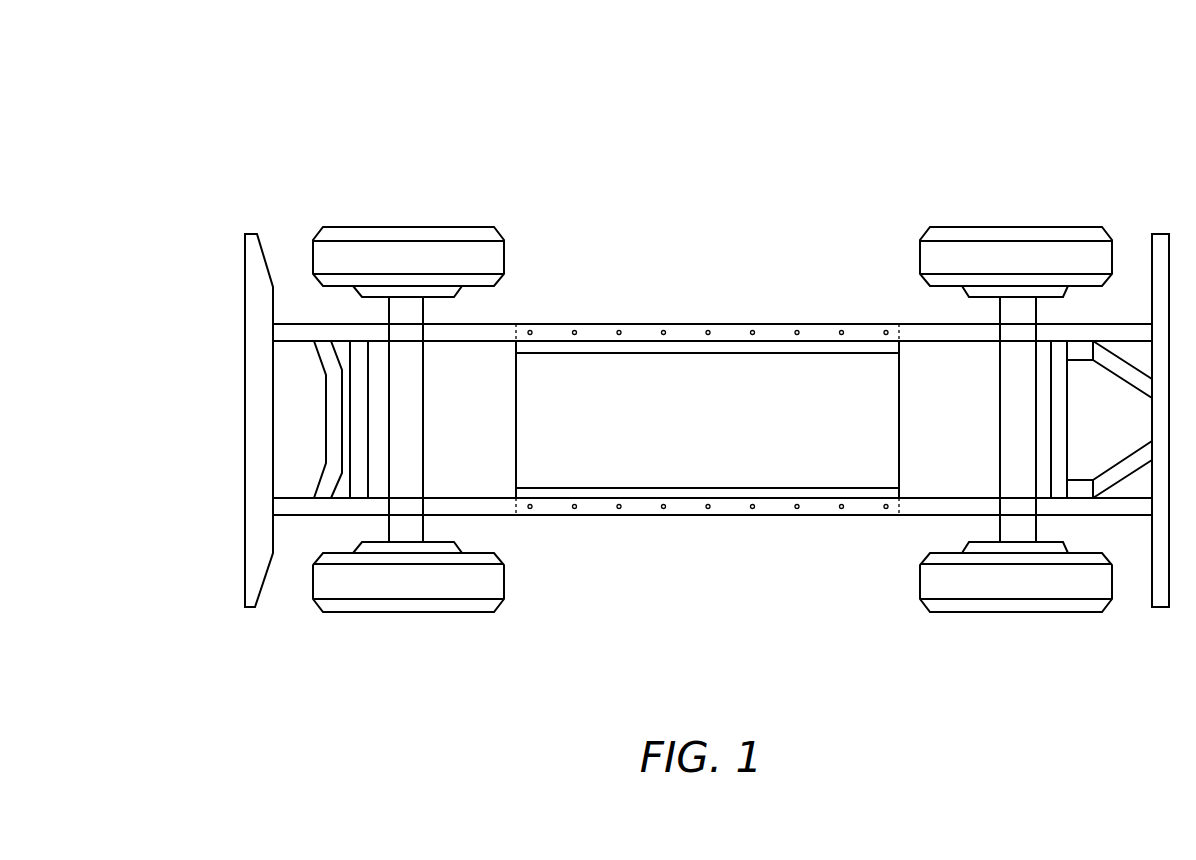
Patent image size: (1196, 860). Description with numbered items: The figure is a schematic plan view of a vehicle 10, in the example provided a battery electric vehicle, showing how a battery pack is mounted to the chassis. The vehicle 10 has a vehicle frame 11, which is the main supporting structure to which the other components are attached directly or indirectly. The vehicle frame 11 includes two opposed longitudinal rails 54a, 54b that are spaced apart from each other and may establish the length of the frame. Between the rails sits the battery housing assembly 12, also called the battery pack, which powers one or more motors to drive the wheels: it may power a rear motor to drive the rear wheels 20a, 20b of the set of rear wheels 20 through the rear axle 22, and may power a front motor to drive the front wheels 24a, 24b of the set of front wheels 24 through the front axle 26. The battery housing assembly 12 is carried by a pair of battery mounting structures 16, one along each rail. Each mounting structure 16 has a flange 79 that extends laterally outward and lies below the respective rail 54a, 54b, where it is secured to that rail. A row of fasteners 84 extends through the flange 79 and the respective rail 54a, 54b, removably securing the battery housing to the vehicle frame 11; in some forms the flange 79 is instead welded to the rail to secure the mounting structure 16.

The vehicle 10 is at (265, 100).
The vehicle frame 11 is at (778, 247).
The battery housing assembly 12 is at (795, 385).
The battery mounting structure 16 is at (872, 331).
The set of rear wheels 20 is at (968, 195).
The rear wheel 20a is at (1045, 233).
The rear wheel 20b is at (1002, 592).
The rear axle 22 is at (1015, 445).
The set of front wheels 24 is at (390, 197).
The front wheel 24a is at (473, 233).
The front wheel 24b is at (397, 588).
The front axle 26 is at (412, 418).
The longitudinal rail 54a is at (640, 330).
The longitudinal rail 54b is at (815, 508).
The flange 79 is at (608, 353).
The fastener 84 is at (752, 333).